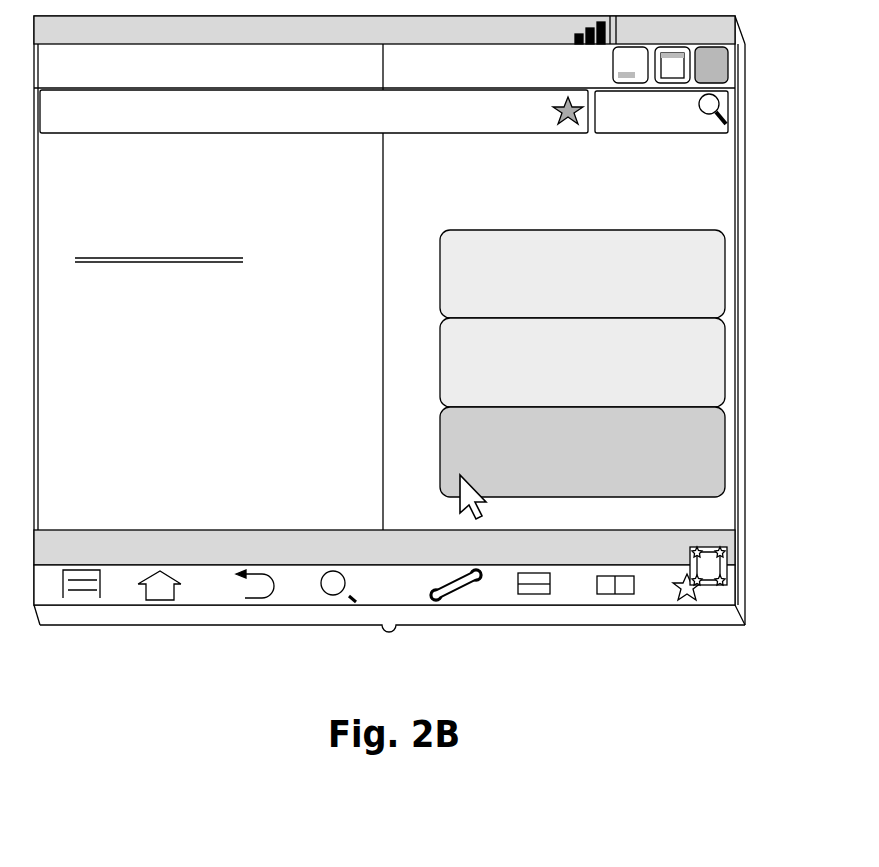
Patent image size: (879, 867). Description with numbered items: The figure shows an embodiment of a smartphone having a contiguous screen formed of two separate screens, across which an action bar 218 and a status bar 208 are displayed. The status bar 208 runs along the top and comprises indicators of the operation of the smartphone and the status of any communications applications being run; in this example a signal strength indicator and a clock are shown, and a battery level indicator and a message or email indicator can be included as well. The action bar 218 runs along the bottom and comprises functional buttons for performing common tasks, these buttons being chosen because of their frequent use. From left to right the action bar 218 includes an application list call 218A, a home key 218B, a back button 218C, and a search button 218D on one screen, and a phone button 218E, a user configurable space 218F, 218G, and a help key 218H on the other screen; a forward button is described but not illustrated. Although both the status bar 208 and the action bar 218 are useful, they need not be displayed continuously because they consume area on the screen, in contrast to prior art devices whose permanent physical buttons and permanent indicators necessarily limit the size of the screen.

The status bar 208 is at (425, 338).
The action bar 218 is at (425, 607).
The application list call 218A is at (92, 598).
The home key 218B is at (163, 600).
The back button 218C is at (245, 598).
The search button 218D is at (322, 597).
The phone button 218E is at (455, 598).
The user configurable space 218F is at (532, 596).
The user configurable space 218G is at (615, 596).
The help key 218H is at (688, 600).